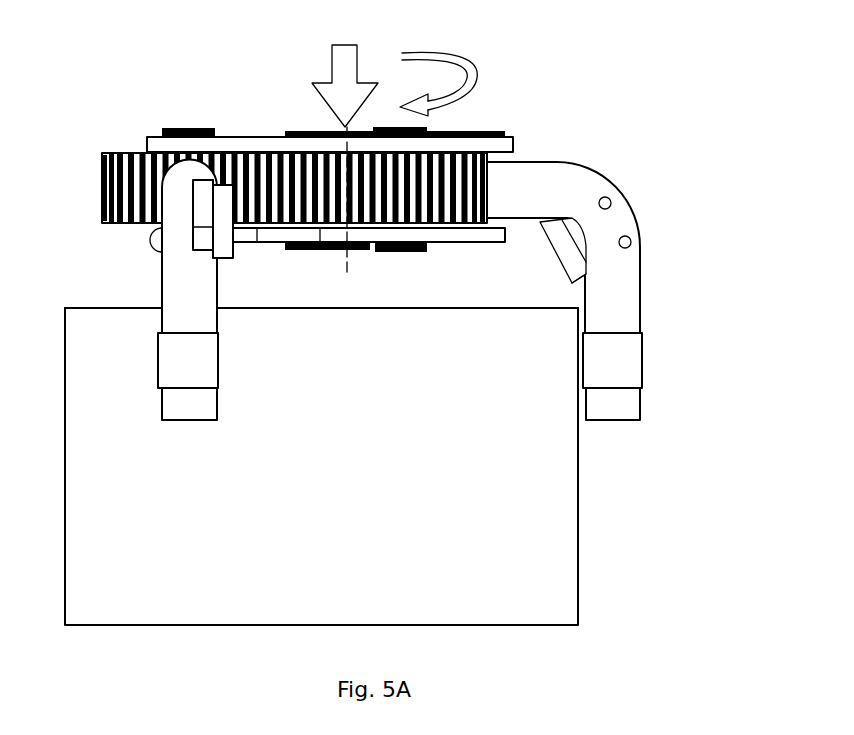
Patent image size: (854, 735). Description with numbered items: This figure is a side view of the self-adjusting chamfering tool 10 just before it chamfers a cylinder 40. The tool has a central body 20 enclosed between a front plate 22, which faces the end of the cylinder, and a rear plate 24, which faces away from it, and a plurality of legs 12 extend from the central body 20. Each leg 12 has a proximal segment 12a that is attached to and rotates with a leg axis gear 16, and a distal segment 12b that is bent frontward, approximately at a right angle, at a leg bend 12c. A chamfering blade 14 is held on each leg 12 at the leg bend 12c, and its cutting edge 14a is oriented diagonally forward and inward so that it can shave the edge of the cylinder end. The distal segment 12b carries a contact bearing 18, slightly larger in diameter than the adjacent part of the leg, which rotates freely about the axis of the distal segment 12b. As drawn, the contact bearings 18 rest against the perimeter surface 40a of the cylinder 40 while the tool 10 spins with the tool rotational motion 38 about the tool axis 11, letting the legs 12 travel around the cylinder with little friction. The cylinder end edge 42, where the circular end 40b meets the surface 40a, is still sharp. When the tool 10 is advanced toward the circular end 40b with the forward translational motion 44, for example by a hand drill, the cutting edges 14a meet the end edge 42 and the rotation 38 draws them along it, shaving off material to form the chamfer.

The chamfering tool 10 is at (703, 113).
The tool axis 11 is at (345, 127).
The leg 12 is at (147, 268).
The proximal segment 12a is at (555, 162).
The distal segment 12b is at (640, 290).
The leg bend 12c is at (625, 202).
The chamfering blade 14 is at (553, 240).
The cutting edge 14a is at (563, 270).
The leg axis gear 16 is at (105, 190).
The contact bearing 18 is at (213, 362).
The central body 20 is at (192, 108).
The front plate 22 is at (247, 238).
The rear plate 24 is at (146, 137).
The tool rotational motion 38 is at (473, 80).
The cylinder 40 is at (578, 530).
The surface 40a is at (578, 450).
The circular end 40b is at (128, 307).
The cylinder end edge 42 is at (65, 308).
The forward translational motion 44 is at (332, 62).